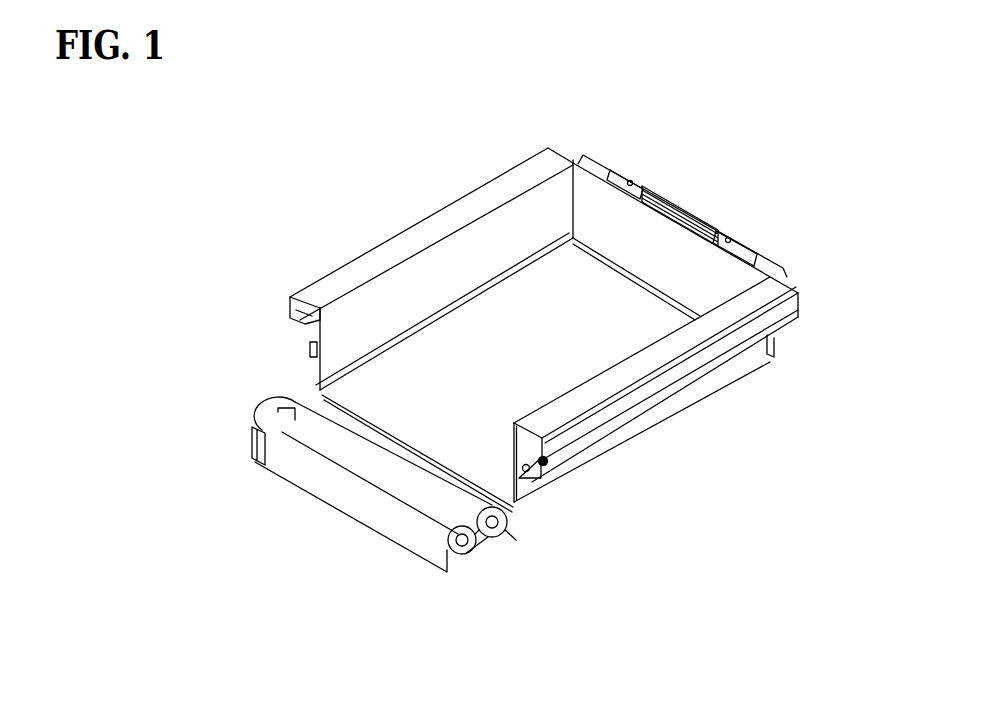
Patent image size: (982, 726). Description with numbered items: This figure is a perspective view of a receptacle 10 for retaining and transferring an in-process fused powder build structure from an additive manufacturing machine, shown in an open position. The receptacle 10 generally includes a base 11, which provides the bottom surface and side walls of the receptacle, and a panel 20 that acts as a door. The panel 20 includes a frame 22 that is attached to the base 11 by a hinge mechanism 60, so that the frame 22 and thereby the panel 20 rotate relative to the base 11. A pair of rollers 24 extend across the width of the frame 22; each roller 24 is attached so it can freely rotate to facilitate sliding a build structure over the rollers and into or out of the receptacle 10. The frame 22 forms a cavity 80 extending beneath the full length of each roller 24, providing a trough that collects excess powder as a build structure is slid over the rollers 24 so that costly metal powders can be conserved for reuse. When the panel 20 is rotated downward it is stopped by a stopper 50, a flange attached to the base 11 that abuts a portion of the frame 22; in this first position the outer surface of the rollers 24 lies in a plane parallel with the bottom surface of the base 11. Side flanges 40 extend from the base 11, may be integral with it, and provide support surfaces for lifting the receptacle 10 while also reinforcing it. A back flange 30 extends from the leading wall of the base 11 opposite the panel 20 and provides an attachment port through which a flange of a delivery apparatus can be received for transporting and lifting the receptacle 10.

The receptacle 10 is at (262, 151).
The base 11 is at (445, 348).
The panel 20 is at (262, 388).
The frame 22 is at (283, 481).
The rollers 24 is at (280, 433).
The back flange 30 is at (717, 230).
The side flanges 40 is at (712, 352).
The stopper 50 is at (527, 503).
The hinge mechanism 60 is at (527, 503).
The cavity 80 is at (330, 497).